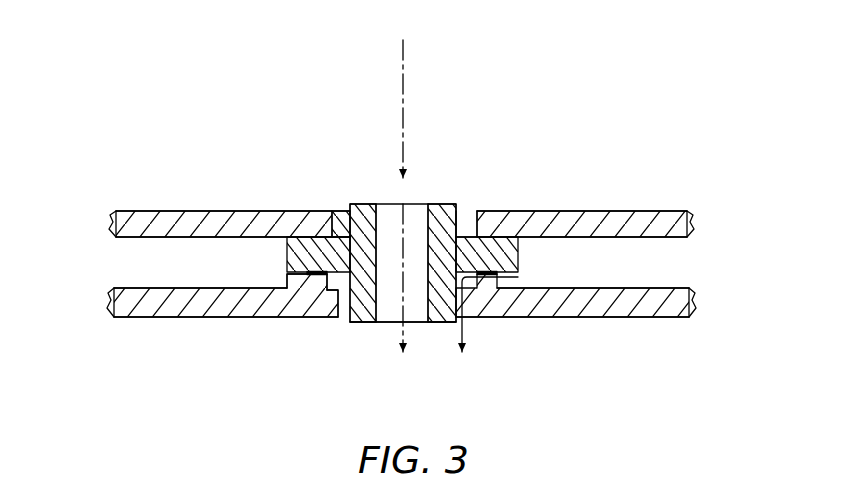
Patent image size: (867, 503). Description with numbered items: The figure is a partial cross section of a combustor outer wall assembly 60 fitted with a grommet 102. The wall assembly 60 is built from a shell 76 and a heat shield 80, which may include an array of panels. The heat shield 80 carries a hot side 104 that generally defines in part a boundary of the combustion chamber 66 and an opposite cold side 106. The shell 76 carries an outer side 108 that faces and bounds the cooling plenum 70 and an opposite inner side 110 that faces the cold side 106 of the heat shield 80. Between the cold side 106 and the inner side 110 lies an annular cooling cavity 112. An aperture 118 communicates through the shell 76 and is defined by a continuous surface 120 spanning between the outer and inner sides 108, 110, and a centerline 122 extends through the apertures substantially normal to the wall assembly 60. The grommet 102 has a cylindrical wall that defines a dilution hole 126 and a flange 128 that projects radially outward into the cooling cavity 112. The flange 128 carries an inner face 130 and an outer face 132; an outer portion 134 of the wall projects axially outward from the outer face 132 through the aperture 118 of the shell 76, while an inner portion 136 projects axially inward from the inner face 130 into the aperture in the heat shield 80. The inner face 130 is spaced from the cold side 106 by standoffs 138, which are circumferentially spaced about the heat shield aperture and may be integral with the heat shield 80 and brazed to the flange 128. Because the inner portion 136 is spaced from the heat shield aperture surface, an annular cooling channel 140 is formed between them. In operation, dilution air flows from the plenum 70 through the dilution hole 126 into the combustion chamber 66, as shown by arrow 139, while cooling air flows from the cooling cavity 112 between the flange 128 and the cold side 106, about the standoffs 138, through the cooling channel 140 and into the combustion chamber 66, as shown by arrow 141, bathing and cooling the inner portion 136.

The outer wall assembly 60 is at (703, 120).
The combustion chamber 66 is at (310, 357).
The cooling plenum 70 is at (217, 136).
The shell 76 is at (617, 208).
The heat shield 80 is at (660, 327).
The grommet 102 is at (497, 118).
The hot side 104 is at (620, 318).
The cold side 106 is at (672, 288).
The outer side 108 is at (153, 211).
The inner side 110 is at (142, 238).
The annular cooling cavity 112 is at (196, 274).
The aperture 118 is at (467, 227).
The continuous surface 120 is at (342, 211).
The centerline 122 is at (403, 63).
The dilution hole 126 is at (417, 212).
The flange 128 is at (500, 253).
The inner face 130 is at (292, 280).
The outer face 132 is at (300, 235).
The outer portion 134 is at (373, 211).
The inner portion 136 is at (360, 322).
The standoffs 138 is at (312, 276).
The arrow 139 is at (410, 342).
The cooling channel 140 is at (345, 310).
The arrow 141 is at (463, 342).